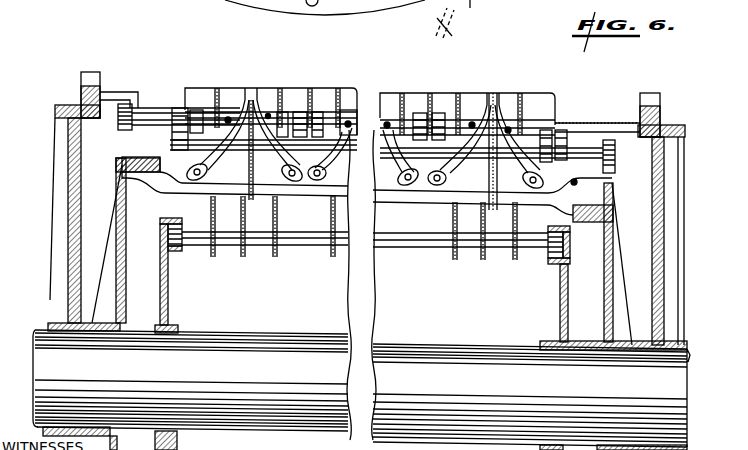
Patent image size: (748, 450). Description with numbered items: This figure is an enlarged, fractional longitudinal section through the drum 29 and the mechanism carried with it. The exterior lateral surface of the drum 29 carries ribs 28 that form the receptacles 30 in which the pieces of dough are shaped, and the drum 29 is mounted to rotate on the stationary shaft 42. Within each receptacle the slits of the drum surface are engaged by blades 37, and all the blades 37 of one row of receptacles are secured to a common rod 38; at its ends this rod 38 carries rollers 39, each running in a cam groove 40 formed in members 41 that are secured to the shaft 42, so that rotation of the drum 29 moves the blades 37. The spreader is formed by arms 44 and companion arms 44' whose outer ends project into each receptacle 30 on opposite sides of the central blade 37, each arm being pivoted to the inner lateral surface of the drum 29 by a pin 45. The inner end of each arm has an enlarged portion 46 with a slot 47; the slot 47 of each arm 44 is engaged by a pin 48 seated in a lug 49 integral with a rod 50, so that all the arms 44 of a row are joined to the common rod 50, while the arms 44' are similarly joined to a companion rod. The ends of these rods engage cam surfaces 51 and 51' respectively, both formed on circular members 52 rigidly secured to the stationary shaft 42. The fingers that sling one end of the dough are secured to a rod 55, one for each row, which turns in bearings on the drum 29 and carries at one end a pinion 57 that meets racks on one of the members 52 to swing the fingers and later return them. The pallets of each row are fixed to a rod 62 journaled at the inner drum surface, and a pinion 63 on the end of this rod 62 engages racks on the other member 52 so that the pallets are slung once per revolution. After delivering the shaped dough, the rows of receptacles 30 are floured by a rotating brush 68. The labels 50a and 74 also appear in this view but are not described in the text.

The ribs 28 is at (185, 90).
The drum 29 is at (62, 105).
The receptacles 30 is at (410, 0).
The blades 37 is at (228, 0).
The rod 38 is at (530, 248).
The rollers 39 is at (182, 226).
The cam groove 40 is at (160, 232).
The members 41 is at (168, 298).
The shaft 42 is at (448, 345).
The arms 44 is at (370, 86).
The arms 44' is at (487, 140).
The pin 45 is at (268, 116).
The enlarged portion 46 is at (225, 192).
The slot 47 is at (262, 150).
The pin 48 is at (196, 180).
The lug 49 is at (186, 168).
The rod 50 is at (265, 190).
The bar offset bracket 50a is at (155, 182).
The cam surface 51 is at (390, 226).
The cam surface 51' is at (348, 202).
The circular members 52 is at (126, 270).
The rod 55 is at (582, 154).
The pinion 57 is at (616, 148).
The rod 62 is at (158, 112).
The pinion 63 is at (120, 130).
The rotating brush 68 is at (452, 29).
The post 74 is at (91, 80).